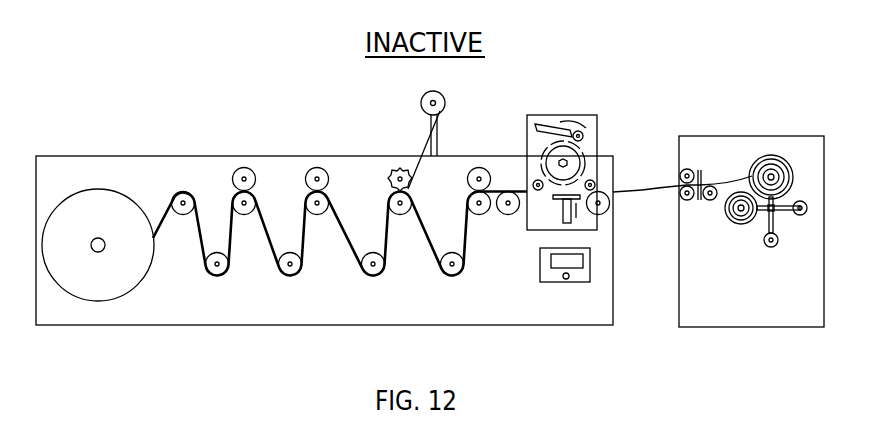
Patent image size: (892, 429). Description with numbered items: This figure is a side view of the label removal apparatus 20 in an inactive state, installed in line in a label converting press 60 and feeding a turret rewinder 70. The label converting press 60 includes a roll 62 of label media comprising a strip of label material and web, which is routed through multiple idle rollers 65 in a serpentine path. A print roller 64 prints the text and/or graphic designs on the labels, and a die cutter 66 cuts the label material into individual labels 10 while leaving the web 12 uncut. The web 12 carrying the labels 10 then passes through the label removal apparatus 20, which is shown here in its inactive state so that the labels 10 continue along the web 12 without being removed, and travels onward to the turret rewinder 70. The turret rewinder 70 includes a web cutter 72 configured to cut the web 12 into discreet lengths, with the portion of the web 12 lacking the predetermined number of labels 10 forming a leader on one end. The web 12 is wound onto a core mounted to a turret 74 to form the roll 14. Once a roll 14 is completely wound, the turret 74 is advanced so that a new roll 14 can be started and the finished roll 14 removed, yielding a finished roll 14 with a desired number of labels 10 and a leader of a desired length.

The labels 10 is at (650, 186).
The web 12 is at (628, 193).
The roll 14 is at (785, 162).
The label removal apparatus 20 is at (560, 95).
The label converting press 60 is at (227, 106).
The roll of label media 62 is at (97, 190).
The print roller 64 is at (316, 177).
The idle rollers 65 is at (243, 210).
The die cutter 66 is at (398, 177).
The turret rewinder 70 is at (749, 86).
The web cutter 72 is at (700, 170).
The turret 74 is at (783, 217).